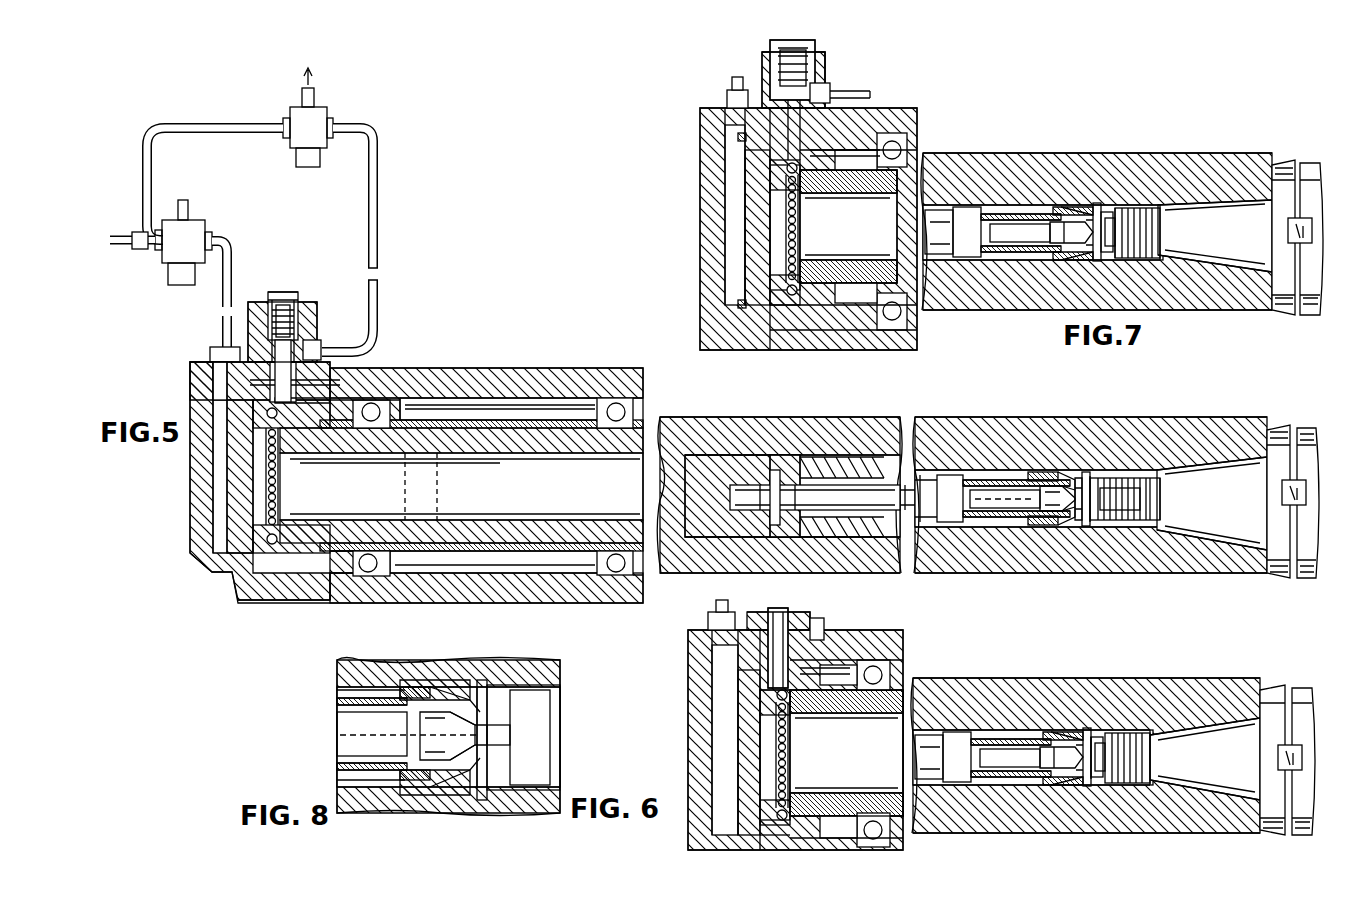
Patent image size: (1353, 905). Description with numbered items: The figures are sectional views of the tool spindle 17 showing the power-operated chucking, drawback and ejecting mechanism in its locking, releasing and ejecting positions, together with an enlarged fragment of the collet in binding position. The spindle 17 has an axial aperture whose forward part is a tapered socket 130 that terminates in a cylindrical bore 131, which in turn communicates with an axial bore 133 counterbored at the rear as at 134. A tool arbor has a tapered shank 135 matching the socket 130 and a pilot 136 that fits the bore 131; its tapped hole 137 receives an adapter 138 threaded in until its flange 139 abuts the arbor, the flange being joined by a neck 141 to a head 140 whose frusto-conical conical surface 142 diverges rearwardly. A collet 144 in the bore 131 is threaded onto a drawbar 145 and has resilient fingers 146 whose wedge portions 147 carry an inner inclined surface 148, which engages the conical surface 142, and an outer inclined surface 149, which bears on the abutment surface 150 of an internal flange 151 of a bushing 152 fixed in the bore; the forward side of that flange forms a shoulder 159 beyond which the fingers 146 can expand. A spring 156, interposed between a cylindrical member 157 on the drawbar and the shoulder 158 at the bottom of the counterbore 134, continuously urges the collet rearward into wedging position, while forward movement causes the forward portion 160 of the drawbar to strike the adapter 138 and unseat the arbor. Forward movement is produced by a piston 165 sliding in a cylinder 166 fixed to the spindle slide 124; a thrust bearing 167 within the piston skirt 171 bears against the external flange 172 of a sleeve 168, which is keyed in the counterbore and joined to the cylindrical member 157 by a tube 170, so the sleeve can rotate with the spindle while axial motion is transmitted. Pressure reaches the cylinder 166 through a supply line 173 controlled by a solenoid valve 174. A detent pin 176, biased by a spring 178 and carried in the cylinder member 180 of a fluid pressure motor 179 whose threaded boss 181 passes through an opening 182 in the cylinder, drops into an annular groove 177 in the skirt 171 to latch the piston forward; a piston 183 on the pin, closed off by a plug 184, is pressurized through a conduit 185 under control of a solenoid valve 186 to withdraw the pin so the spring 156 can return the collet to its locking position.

In FIG. 5, the spindle 17 is at (1235, 440).
In FIG. 7, the spindle 17 is at (1232, 170).
In FIG. 6, the spindle 17 is at (1113, 756).
In FIG. 8, the spindle 17 is at (392, 805).
In FIG. 5, the spindle slide 124 is at (540, 372).
In FIG. 7, the tapered socket 130 is at (1245, 165).
In FIG. 5, the cylindrical bore 131 is at (980, 470).
In FIG. 7, the cylindrical bore 131 is at (1115, 220).
In FIG. 5, the axial bore 133 is at (815, 497).
In FIG. 5, the counterbore 134 is at (841, 451).
In FIG. 5, the shank 135 is at (1210, 530).
In FIG. 7, the shank 135 is at (1235, 270).
In FIG. 5, the pilot 136 is at (1113, 470).
In FIG. 7, the pilot 136 is at (1130, 262).
In FIG. 6, the pilot 136 is at (1120, 757).
In FIG. 5, the tapped hole 137 is at (1155, 475).
In FIG. 5, the adapter 138 is at (1090, 475).
In FIG. 7, the adapter 138 is at (1110, 230).
In FIG. 6, the adapter 138 is at (1120, 740).
In FIG. 5, the flange 139 is at (1085, 485).
In FIG. 7, the flange 139 is at (1100, 215).
In FIG. 6, the flange 139 is at (1110, 780).
In FIG. 8, the flange 139 is at (490, 745).
In FIG. 7, the head 140 is at (1082, 212).
In FIG. 6, the head 140 is at (1030, 790).
In FIG. 8, the head 140 is at (445, 770).
In FIG. 7, the neck 141 is at (1105, 215).
In FIG. 6, the neck 141 is at (1165, 800).
In FIG. 8, the neck 141 is at (490, 738).
In FIG. 5, the conical surface 142 is at (1080, 525).
In FIG. 7, the conical surface 142 is at (1080, 265).
In FIG. 6, the conical surface 142 is at (1075, 775).
In FIG. 8, the conical surface 142 is at (490, 800).
In FIG. 5, the collet 144 is at (950, 570).
In FIG. 7, the collet 144 is at (1000, 212).
In FIG. 6, the collet 144 is at (992, 760).
In FIG. 5, the drawbar 145 is at (900, 540).
In FIG. 7, the drawbar 145 is at (950, 215).
In FIG. 6, the drawbar 145 is at (925, 770).
In FIG. 5, the resilient fingers 146 is at (995, 520).
In FIG. 7, the resilient fingers 146 is at (1040, 210).
In FIG. 6, the resilient fingers 146 is at (975, 785).
In FIG. 8, the resilient fingers 146 is at (337, 700).
In FIG. 5, the wedge portion 147 is at (1040, 470).
In FIG. 7, the wedge portion 147 is at (1070, 265).
In FIG. 6, the wedge portion 147 is at (1090, 735).
In FIG. 8, the wedge portion 147 is at (488, 725).
In FIG. 5, the inner inclined surface 148 is at (1035, 472).
In FIG. 6, the inner inclined surface 148 is at (1080, 735).
In FIG. 8, the inner inclined surface 148 is at (428, 683).
In FIG. 5, the outer inclined surface 149 is at (1045, 472).
In FIG. 7, the outer inclined surface 149 is at (1085, 210).
In FIG. 6, the outer inclined surface 149 is at (1085, 745).
In FIG. 8, the outer inclined surface 149 is at (480, 690).
In FIG. 5, the abutment surface 150 is at (1050, 515).
In FIG. 7, the abutment surface 150 is at (1055, 262).
In FIG. 6, the abutment surface 150 is at (1050, 780).
In FIG. 8, the abutment surface 150 is at (430, 710).
In FIG. 5, the internal flange 151 is at (1060, 520).
In FIG. 8, the internal flange 151 is at (460, 775).
In FIG. 5, the bushing 152 is at (1030, 470).
In FIG. 8, the bushing 152 is at (405, 683).
In FIG. 5, the spring 156 is at (810, 537).
In FIG. 5, the cylindrical member 157 is at (779, 495).
In FIG. 5, the shoulder 158 is at (842, 481).
In FIG. 5, the shoulder 159 is at (1082, 470).
In FIG. 8, the shoulder 159 is at (470, 683).
In FIG. 5, the forward portion of the drawbar 160 is at (968, 520).
In FIG. 7, the forward portion of the drawbar 160 is at (1010, 262).
In FIG. 6, the forward portion of the drawbar 160 is at (1003, 740).
In FIG. 8, the forward portion of the drawbar 160 is at (340, 737).
In FIG. 5, the piston 165 is at (222, 420).
In FIG. 7, the piston 165 is at (755, 235).
In FIG. 6, the piston 165 is at (745, 730).
In FIG. 5, the cylinder 166 is at (192, 380).
In FIG. 7, the cylinder 166 is at (710, 205).
In FIG. 6, the cylinder 166 is at (695, 705).
In FIG. 5, the thrust bearing 167 is at (302, 600).
In FIG. 7, the thrust bearing 167 is at (790, 175).
In FIG. 6, the thrust bearing 167 is at (780, 703).
In FIG. 5, the sleeve 168 is at (402, 440).
In FIG. 7, the sleeve 168 is at (812, 208).
In FIG. 6, the sleeve 168 is at (862, 723).
In FIG. 5, the tube 170 is at (553, 520).
In FIG. 5, the skirt 171 is at (278, 592).
In FIG. 5, the external flange 172 is at (308, 600).
In FIG. 7, the external flange 172 is at (810, 270).
In FIG. 6, the external flange 172 is at (808, 723).
In FIG. 5, the fluid pressure supply line 173 is at (222, 288).
In FIG. 7, the fluid pressure supply line 173 is at (727, 88).
In FIG. 6, the fluid pressure supply line 173 is at (718, 612).
In FIG. 5, the solenoid valve 174 is at (195, 230).
In FIG. 5, the detent pin 176 is at (330, 356).
In FIG. 7, the detent pin 176 is at (835, 95).
In FIG. 6, the detent pin 176 is at (803, 630).
In FIG. 7, the annular groove 177 is at (775, 300).
In FIG. 6, the annular groove 177 is at (770, 845).
In FIG. 5, the spring 178 is at (288, 292).
In FIG. 7, the spring 178 is at (810, 48).
In FIG. 5, the fluid pressure motor 179 is at (317, 307).
In FIG. 7, the fluid pressure motor 179 is at (834, 72).
In FIG. 6, the fluid pressure motor 179 is at (798, 616).
In FIG. 5, the cylinder member 180 is at (318, 302).
In FIG. 7, the cylinder member 180 is at (765, 58).
In FIG. 5, the threaded boss 181 is at (325, 385).
In FIG. 7, the threaded boss 181 is at (840, 105).
In FIG. 6, the threaded boss 181 is at (822, 656).
In FIG. 5, the opening 182 is at (344, 411).
In FIG. 7, the opening 182 is at (708, 118).
In FIG. 5, the piston 183 is at (310, 328).
In FIG. 7, the piston 183 is at (765, 75).
In FIG. 5, the plug 184 is at (300, 288).
In FIG. 5, the conduit 185 is at (378, 192).
In FIG. 5, the solenoid valve 186 is at (320, 110).